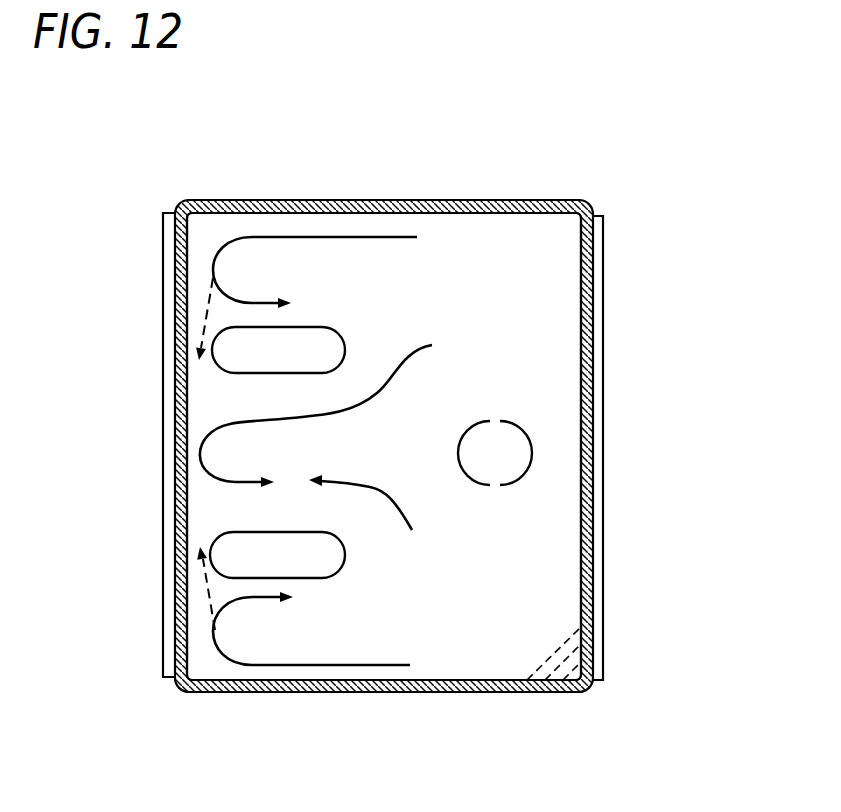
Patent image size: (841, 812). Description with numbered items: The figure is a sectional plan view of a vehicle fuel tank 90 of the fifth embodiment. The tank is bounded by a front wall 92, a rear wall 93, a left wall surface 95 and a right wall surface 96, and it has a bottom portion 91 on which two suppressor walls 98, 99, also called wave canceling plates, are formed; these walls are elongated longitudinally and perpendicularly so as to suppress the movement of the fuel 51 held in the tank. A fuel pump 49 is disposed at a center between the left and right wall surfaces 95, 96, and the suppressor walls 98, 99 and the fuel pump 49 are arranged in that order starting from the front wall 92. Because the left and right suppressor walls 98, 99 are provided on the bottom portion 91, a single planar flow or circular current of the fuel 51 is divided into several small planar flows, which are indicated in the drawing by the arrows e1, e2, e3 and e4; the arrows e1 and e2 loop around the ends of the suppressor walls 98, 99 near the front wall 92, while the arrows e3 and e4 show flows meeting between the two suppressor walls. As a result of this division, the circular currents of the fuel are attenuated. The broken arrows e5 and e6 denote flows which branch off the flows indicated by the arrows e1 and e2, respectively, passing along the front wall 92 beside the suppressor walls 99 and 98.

The vehicle fuel tank 90 is at (230, 186).
The bottom portion 91 is at (473, 232).
The front wall 92 is at (175, 265).
The rear wall 93 is at (603, 265).
The left wall surface 95 is at (330, 692).
The right wall surface 96 is at (368, 200).
The suppressor wall 98 is at (212, 545).
The suppressor wall 99 is at (215, 369).
The fuel pump 49 is at (490, 422).
The fuel 51 is at (560, 647).
The arrow e1 is at (315, 272).
The arrow e2 is at (311, 628).
The arrow e3 is at (316, 416).
The arrow e4 is at (374, 502).
The flow e5 is at (219, 319).
The flow e6 is at (218, 588).